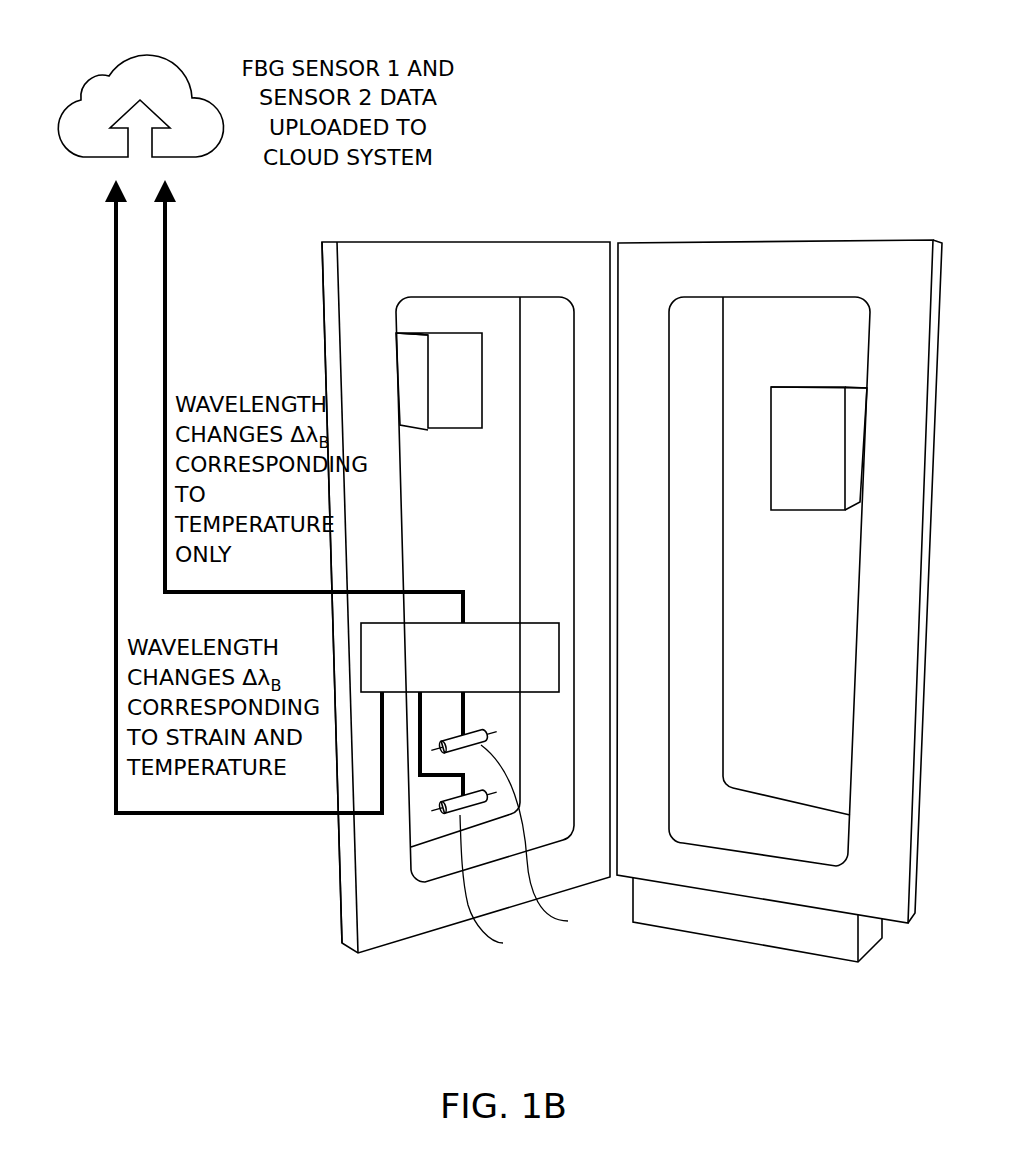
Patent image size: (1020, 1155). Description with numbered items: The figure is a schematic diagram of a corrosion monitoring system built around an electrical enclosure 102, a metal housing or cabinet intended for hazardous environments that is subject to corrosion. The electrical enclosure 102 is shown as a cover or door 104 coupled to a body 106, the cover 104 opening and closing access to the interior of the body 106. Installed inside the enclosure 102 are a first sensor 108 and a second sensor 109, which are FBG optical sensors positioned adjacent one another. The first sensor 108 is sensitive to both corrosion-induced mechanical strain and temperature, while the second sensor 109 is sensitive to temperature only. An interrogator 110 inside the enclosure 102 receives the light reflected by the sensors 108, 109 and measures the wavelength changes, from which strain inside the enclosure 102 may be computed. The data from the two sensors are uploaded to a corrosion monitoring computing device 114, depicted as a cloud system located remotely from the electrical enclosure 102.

The electrical enclosure 102 is at (845, 146).
The cover or door 104 is at (472, 253).
The body 106 is at (820, 250).
The first sensor 108 is at (486, 871).
The second sensor 109 is at (519, 830).
The interrogator 110 is at (480, 685).
The corrosion monitoring computing device 114 is at (148, 56).